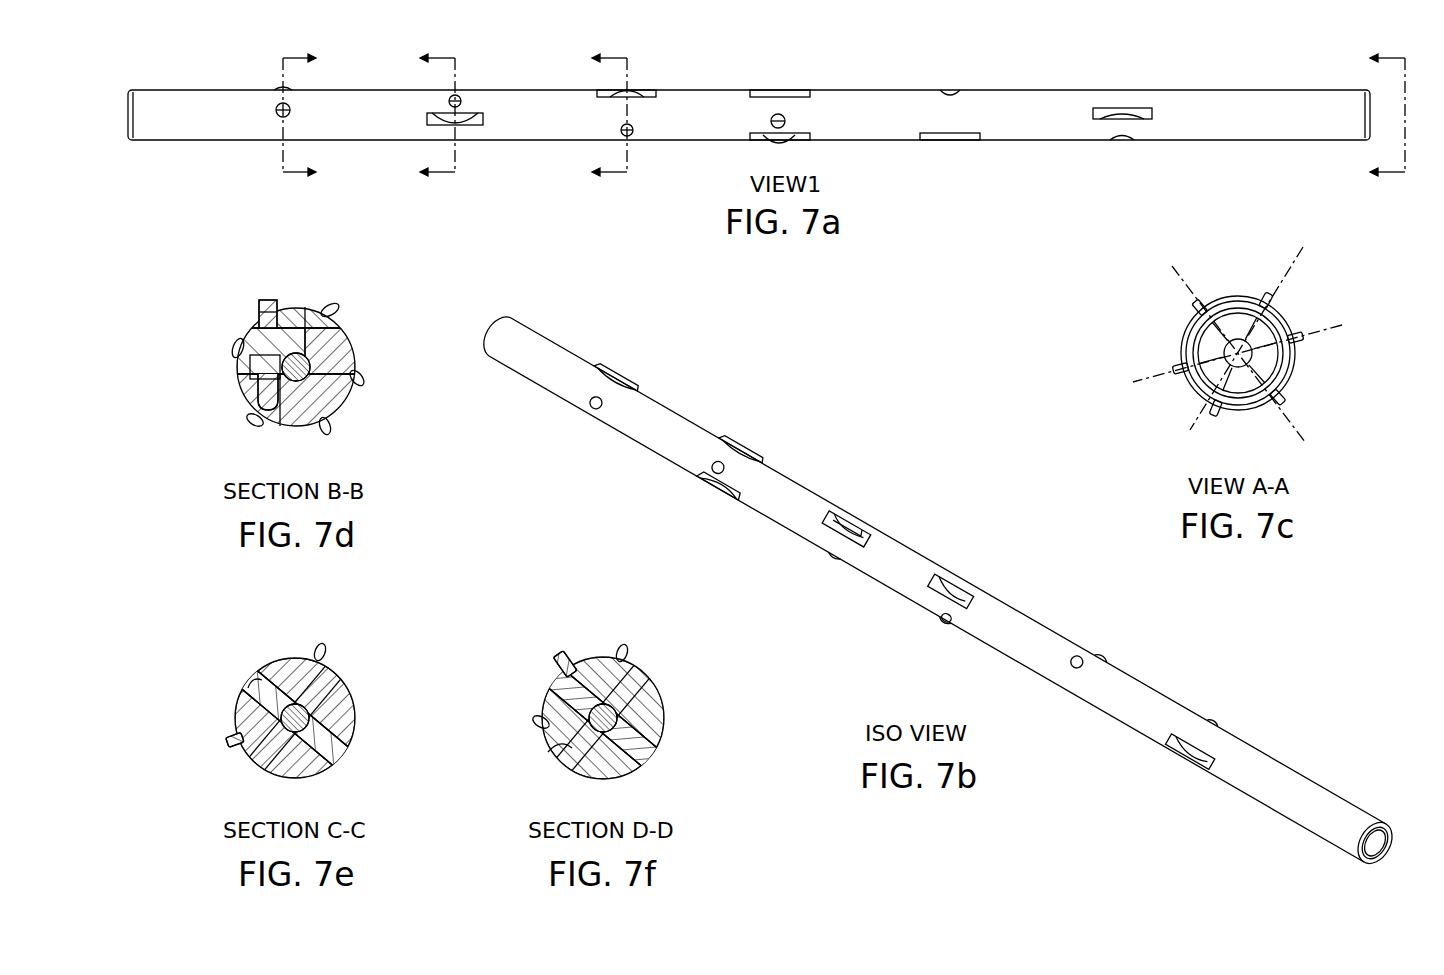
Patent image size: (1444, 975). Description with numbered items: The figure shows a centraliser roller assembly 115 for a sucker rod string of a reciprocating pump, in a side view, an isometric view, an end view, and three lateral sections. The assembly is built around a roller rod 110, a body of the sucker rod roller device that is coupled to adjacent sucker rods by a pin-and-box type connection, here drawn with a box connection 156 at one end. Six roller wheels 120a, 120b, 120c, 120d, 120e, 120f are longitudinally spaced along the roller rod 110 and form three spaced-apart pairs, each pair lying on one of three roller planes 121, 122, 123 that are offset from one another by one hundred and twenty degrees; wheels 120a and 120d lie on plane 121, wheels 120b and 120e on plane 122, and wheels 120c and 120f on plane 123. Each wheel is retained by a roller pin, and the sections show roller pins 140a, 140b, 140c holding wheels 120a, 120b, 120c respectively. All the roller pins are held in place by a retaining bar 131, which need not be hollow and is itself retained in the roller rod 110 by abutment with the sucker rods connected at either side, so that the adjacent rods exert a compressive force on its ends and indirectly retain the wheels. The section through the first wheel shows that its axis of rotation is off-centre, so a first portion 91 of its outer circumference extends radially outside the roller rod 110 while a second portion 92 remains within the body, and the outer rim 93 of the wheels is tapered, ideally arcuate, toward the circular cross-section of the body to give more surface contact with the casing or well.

In FIG. 7a, the roller rod 110 is at (1030, 141).
In FIG. 7d, the roller rod 110 is at (337, 393).
In FIG. 7c, the roller rod 110 is at (1238, 353).
In FIG. 7b, the roller rod 110 is at (683, 410).
In FIG. 7e, the roller rod 110 is at (340, 695).
In FIG. 7f, the roller rod 110 is at (648, 745).
In FIG. 7a, the centraliser roller assembly 115 is at (998, 205).
In FIG. 7b, the centraliser roller assembly 115 is at (878, 427).
In FIG. 7a, the roller wheel 120a is at (281, 88).
In FIG. 7d, the roller wheel 120a is at (270, 300).
In FIG. 7c, the roller wheel 120a is at (1262, 292).
In FIG. 7b, the roller wheel 120a is at (622, 372).
In FIG. 7a, the roller wheel 120b is at (455, 113).
In FIG. 7c, the roller wheel 120b is at (1298, 335).
In FIG. 7b, the roller wheel 120b is at (712, 486).
In FIG. 7e, the roller wheel 120b is at (237, 742).
In FIG. 7a, the roller wheel 120c is at (627, 92).
In FIG. 7c, the roller wheel 120c is at (1282, 400).
In FIG. 7b, the roller wheel 120c is at (873, 533).
In FIG. 7f, the roller wheel 120c is at (570, 665).
In FIG. 7a, the roller wheel 120d is at (778, 135).
In FIG. 7c, the roller wheel 120d is at (1212, 410).
In FIG. 7b, the roller wheel 120d is at (945, 624).
In FIG. 7c, the roller wheel 120e is at (1180, 370).
In FIG. 7b, the roller wheel 120e is at (1103, 655).
In FIG. 7a, the roller wheel 120f is at (1122, 116).
In FIG. 7c, the roller wheel 120f is at (1198, 305).
In FIG. 7b, the roller wheel 120f is at (1190, 760).
In FIG. 7c, the roller plane 121 is at (1262, 323).
In FIG. 7c, the roller plane 122 is at (1262, 347).
In FIG. 7c, the roller plane 123 is at (1255, 367).
In FIG. 7d, the retaining bar 131 is at (298, 354).
In FIG. 7e, the retaining bar 131 is at (282, 716).
In FIG. 7f, the retaining bar 131 is at (590, 715).
In FIG. 7d, the roller pin 140a is at (244, 368).
In FIG. 7e, the roller pin 140b is at (258, 690).
In FIG. 7f, the roller pin 140c is at (555, 748).
In FIG. 7d, the first portion of the outer circumference of the wheel 91 is at (260, 318).
In FIG. 7d, the second portion of the outer circumference of the wheel 92 is at (258, 412).
In FIG. 7d, the outer rim of the wheels 93 is at (265, 300).
In FIG. 7b, the box connection 156 is at (1378, 818).